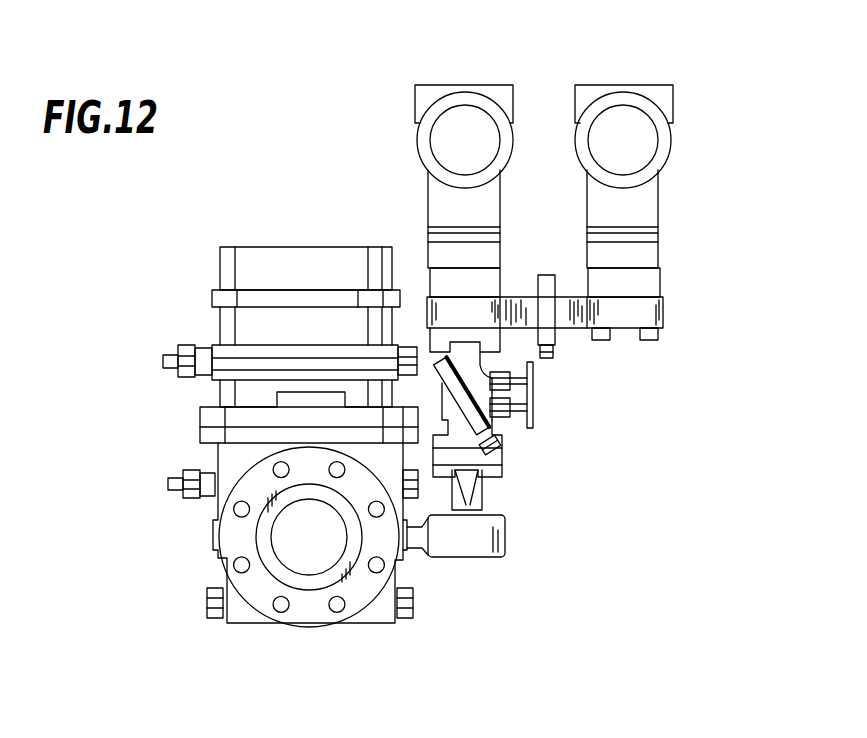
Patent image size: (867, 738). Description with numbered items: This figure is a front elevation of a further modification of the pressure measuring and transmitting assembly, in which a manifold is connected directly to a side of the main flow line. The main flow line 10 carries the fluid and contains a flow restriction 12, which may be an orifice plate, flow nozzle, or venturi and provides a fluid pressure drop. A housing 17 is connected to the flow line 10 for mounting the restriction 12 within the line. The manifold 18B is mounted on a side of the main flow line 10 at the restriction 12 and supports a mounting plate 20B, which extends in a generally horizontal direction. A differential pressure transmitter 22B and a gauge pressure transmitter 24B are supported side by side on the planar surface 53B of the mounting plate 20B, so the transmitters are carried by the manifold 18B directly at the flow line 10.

The main flow line 10 is at (302, 558).
The flow restriction 12 is at (263, 542).
The housing 17 is at (235, 327).
The manifold 18B is at (492, 428).
The mounting plate 20B is at (663, 310).
The differential pressure transmitter 22B is at (467, 83).
The gauge pressure transmitter 24B is at (633, 83).
The planar surface 53B is at (513, 297).